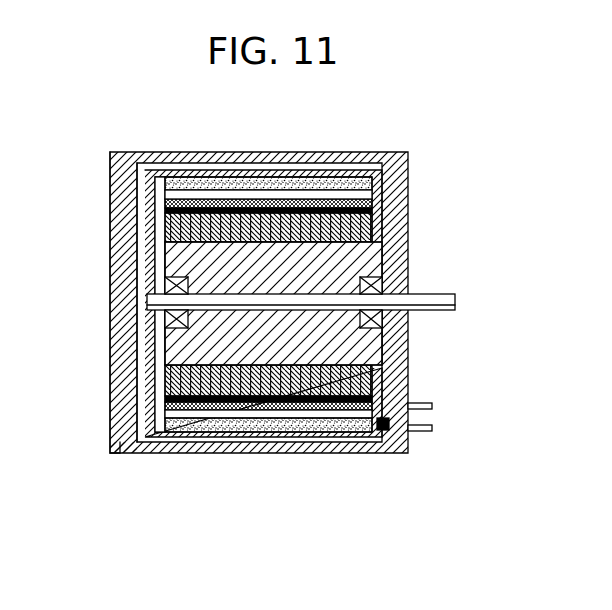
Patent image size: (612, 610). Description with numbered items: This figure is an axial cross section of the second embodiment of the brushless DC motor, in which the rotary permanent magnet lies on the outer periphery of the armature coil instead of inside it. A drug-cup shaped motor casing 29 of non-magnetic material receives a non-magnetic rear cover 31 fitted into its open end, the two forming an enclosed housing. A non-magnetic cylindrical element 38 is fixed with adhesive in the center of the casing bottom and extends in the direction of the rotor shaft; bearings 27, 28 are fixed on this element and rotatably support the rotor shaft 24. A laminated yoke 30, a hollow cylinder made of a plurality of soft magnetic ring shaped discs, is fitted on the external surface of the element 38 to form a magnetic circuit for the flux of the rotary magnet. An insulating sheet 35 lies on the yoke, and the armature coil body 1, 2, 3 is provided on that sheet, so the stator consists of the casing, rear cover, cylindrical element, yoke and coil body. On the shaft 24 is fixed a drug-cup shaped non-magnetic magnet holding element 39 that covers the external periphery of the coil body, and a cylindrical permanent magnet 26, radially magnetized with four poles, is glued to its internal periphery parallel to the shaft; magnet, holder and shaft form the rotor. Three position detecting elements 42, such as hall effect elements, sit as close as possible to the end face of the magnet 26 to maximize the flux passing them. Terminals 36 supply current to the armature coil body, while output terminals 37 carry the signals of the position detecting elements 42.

The armature coil body 1 is at (314, 123).
The armature coil body 2 is at (268, 210).
The armature coil body 3 is at (268, 183).
The rotor shaft 24 is at (438, 303).
The permanent magnet 26 is at (228, 425).
The bearing 27 is at (378, 322).
The bearing 28 is at (152, 327).
The motor casing 29 is at (398, 178).
The laminated yoke 30 is at (355, 228).
The rear cover 31 is at (118, 245).
The insulating sheet 35 is at (177, 407).
The terminals 36 is at (417, 402).
The output terminals 37 is at (425, 427).
The cylindrical element 38 is at (268, 350).
The magnet holding element 39 is at (152, 397).
The position detecting elements 42 is at (380, 432).